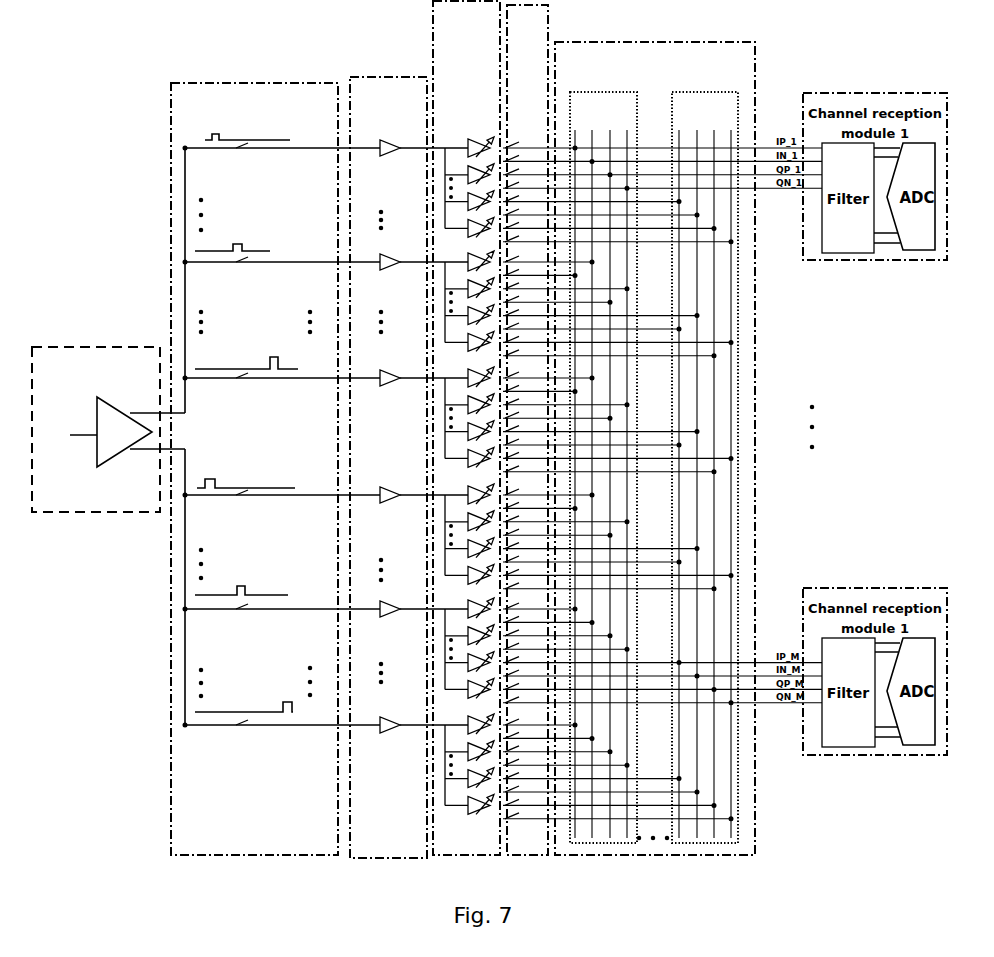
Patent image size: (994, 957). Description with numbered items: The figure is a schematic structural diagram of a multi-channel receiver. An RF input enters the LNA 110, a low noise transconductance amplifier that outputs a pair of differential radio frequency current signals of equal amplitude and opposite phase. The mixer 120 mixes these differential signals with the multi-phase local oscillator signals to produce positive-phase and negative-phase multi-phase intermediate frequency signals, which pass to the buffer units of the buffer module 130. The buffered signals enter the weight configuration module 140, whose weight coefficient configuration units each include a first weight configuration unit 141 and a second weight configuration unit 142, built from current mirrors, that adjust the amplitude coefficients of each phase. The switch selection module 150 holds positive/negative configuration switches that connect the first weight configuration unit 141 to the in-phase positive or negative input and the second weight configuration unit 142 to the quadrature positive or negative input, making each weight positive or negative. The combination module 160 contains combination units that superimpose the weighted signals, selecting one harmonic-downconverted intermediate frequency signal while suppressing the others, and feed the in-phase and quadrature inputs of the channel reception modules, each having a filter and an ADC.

The LNA 110 is at (108, 429).
The mixer 120 is at (275, 469).
The buffer module 130 is at (388, 467).
The weight configuration module 140 is at (440, 428).
The first weight configuration unit 141 is at (476, 142).
The second weight configuration unit 142 is at (477, 175).
The switch selection module 150 is at (526, 430).
The combination module 160 is at (655, 448).